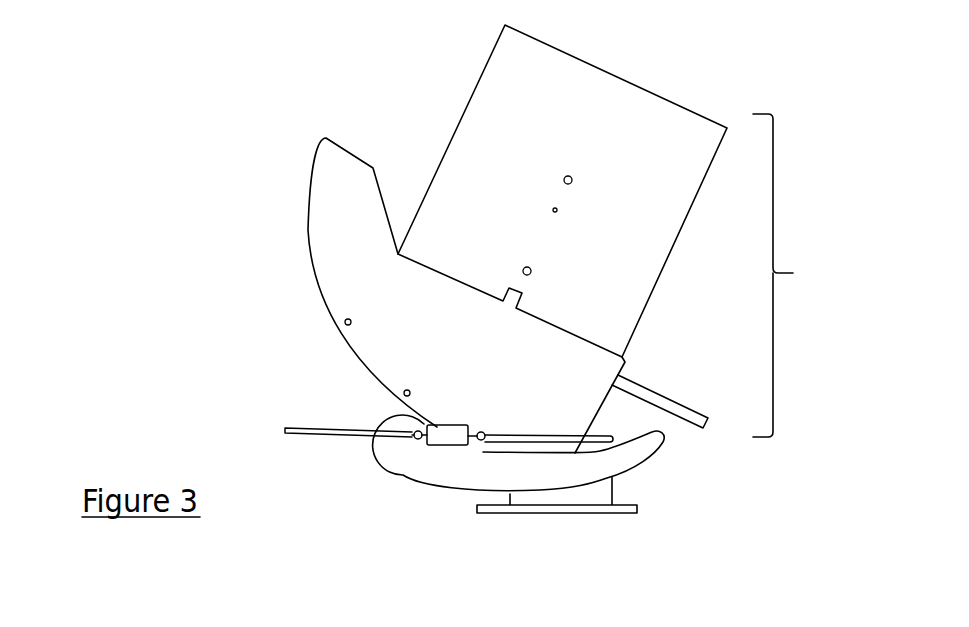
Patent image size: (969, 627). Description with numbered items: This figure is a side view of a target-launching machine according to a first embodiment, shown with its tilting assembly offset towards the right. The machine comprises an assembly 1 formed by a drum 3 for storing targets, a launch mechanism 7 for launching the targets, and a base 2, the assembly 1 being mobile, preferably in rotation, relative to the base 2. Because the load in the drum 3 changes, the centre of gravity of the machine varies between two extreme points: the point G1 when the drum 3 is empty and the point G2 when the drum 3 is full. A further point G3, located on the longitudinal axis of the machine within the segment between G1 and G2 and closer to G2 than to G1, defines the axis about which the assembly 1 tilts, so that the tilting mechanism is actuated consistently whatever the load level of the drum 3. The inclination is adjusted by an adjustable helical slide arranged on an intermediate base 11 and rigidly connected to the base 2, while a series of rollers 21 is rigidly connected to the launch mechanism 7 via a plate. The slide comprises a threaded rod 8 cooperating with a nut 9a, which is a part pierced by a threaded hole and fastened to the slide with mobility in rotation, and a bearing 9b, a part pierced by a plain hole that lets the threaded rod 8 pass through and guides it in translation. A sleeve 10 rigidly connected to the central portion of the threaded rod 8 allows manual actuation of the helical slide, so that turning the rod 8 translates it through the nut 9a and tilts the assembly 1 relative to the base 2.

The assembly 1 is at (786, 275).
The base 2 is at (577, 497).
The drum 3 is at (468, 142).
The launch mechanism 7 is at (327, 231).
The threaded rod 8 is at (285, 428).
The nut 9a is at (418, 439).
The bearing 9b is at (481, 440).
The sleeve 10 is at (445, 445).
The intermediate base 11 is at (643, 447).
The rollers 21 is at (346, 325).
The centre of gravity when drum is empty G1 is at (531, 272).
The centre of gravity when drum is full G2 is at (572, 180).
The point G3 is at (557, 211).